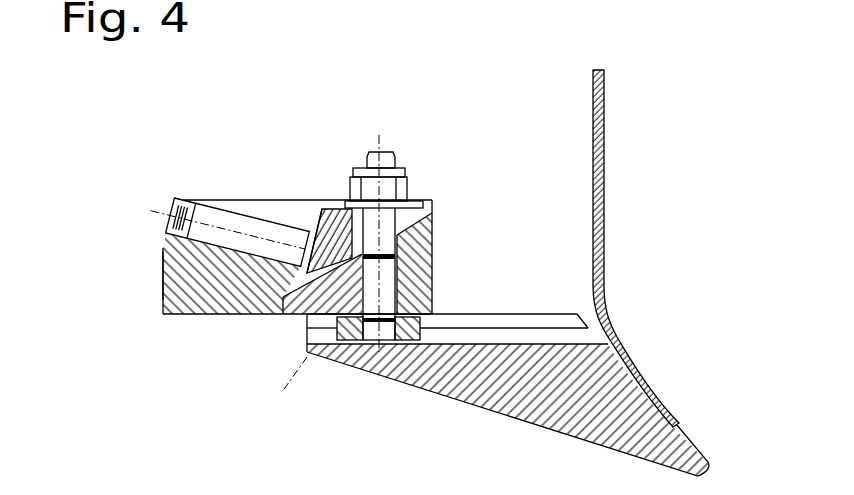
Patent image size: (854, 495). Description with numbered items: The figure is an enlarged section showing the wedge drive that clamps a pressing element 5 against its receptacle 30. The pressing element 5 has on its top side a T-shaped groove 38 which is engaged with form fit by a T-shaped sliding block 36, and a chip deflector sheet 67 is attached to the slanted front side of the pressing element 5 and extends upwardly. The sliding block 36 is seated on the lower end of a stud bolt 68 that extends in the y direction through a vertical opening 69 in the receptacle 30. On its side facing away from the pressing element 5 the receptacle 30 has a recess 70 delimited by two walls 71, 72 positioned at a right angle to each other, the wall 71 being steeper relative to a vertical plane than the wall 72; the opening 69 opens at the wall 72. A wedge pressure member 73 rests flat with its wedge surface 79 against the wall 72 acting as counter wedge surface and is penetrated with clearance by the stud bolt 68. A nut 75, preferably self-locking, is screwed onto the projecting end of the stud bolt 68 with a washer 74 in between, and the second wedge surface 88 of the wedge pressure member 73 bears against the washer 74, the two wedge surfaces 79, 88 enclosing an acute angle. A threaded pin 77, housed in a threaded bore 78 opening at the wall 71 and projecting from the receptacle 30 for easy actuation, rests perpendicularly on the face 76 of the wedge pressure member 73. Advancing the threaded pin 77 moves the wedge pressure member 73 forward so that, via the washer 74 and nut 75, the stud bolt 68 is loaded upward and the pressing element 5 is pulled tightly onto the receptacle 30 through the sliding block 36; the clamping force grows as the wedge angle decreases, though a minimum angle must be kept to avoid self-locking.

The pressing element 5 is at (465, 370).
The receptacle 30 is at (213, 283).
The sliding block 36 is at (282, 392).
The groove 38 is at (510, 340).
The chip deflector sheet 67 is at (600, 180).
The stud bolt 68 is at (420, 214).
The vertical opening 69 is at (398, 286).
The recess 70 is at (277, 210).
The wall 71 is at (237, 314).
The wall (counter wedge surface) 72 is at (294, 300).
The wedge pressure member 73 is at (318, 255).
The washer 74 is at (415, 200).
The nut 75 is at (413, 182).
The face 76 is at (302, 230).
The threaded pin 77 is at (227, 238).
The threaded bore 78 is at (172, 270).
The wedge surface 79 is at (372, 152).
The wedge surface 88 is at (422, 212).